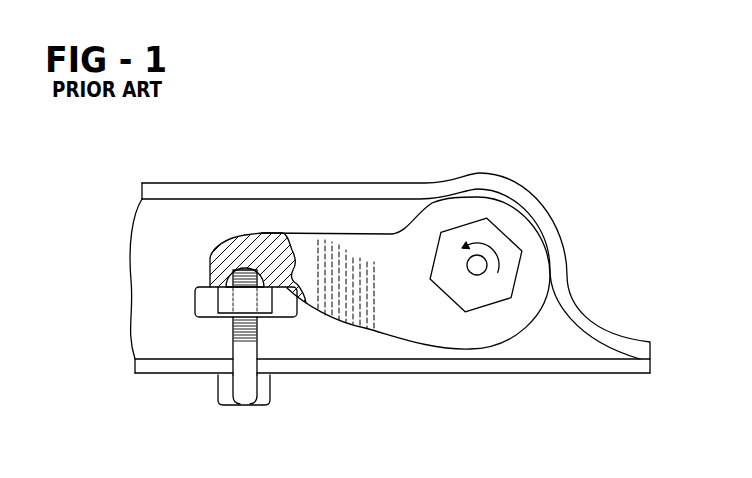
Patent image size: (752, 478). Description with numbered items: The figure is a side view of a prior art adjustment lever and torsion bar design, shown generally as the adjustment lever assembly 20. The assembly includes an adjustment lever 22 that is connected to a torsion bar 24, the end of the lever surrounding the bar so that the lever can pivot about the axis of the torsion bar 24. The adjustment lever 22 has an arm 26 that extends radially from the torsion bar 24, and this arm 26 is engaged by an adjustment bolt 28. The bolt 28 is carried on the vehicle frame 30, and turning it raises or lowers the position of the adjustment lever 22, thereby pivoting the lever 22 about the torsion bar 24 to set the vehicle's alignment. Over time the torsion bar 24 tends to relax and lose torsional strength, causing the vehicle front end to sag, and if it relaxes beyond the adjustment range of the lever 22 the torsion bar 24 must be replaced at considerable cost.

The adjustment lever assembly 20 is at (375, 175).
The adjustment lever 22 is at (420, 320).
The torsion bar 24 is at (488, 299).
The arm 26 is at (310, 240).
The adjustment bolt 28 is at (248, 367).
The vehicle frame 30 is at (220, 213).